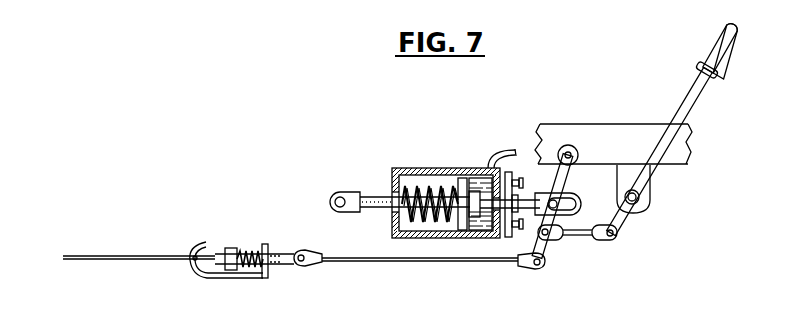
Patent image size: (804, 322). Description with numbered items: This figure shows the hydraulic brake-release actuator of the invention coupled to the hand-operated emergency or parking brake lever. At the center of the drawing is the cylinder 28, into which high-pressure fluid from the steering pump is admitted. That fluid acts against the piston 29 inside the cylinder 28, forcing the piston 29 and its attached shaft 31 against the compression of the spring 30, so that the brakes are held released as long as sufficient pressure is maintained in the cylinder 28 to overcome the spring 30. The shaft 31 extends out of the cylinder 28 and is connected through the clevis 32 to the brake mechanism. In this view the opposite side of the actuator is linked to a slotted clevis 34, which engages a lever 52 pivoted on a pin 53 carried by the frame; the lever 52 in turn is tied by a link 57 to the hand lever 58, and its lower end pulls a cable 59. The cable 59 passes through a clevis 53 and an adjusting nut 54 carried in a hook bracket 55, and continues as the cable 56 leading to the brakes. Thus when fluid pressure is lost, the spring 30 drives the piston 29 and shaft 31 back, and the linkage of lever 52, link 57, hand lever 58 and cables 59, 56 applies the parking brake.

The cylinder 28 is at (444, 168).
The piston 29 is at (462, 228).
The spring 30 is at (421, 220).
The shaft 31 is at (372, 195).
The clevis 32 is at (335, 195).
The slotted clevis 34 is at (570, 216).
The lever 52 is at (569, 180).
The clevis / pivot pin 53 is at (285, 263).
The adjusting nut 54 is at (243, 248).
The hook bracket 55 is at (200, 282).
The cable 56 is at (82, 262).
The link 57 is at (582, 238).
The hand lever 58 is at (700, 95).
The cable 59 is at (356, 262).